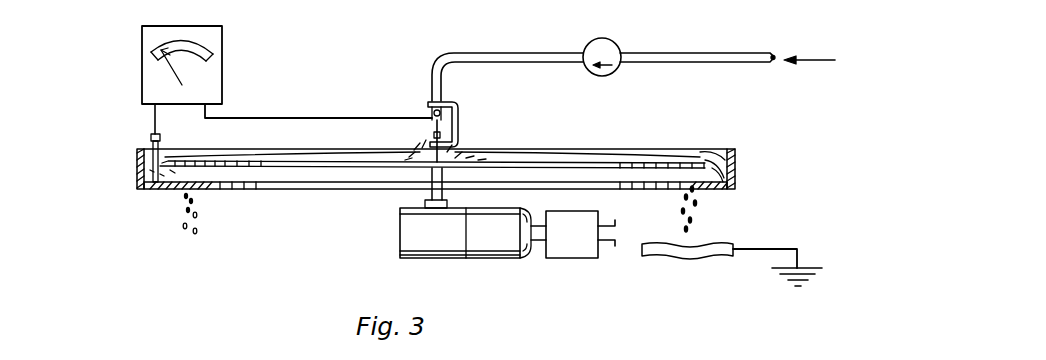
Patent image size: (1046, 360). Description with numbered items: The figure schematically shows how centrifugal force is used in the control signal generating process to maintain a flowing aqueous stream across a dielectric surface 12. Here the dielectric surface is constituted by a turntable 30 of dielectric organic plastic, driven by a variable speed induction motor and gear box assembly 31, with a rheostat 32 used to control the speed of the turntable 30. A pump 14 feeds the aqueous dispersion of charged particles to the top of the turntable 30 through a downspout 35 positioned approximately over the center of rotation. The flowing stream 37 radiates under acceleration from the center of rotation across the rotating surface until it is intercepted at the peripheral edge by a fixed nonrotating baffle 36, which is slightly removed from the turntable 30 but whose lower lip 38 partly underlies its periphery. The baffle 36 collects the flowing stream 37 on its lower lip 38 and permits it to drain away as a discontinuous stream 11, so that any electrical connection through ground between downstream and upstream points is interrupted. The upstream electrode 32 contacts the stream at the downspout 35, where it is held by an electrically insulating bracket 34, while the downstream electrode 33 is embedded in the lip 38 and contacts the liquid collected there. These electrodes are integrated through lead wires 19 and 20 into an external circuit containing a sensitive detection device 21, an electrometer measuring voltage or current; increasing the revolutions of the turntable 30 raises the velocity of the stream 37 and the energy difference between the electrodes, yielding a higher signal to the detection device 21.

The discontinuous stream 11 is at (182, 227).
The dielectric surface 12 is at (618, 155).
The pump 14 is at (603, 40).
The lead wire 19 is at (257, 118).
The lead wire 20 is at (152, 116).
The detection device 21 is at (142, 37).
The turntable 30 is at (297, 166).
The induction motor and gear box assembly 31 is at (407, 235).
The rheostat / upstream electrode 32 is at (440, 150).
The downstream electrode 33 is at (152, 138).
The electrically insulating bracket 34 is at (458, 117).
The downspout 35 is at (432, 75).
The baffle 36 is at (137, 160).
The flowing stream 37 is at (322, 135).
The lower lip 38 is at (152, 188).